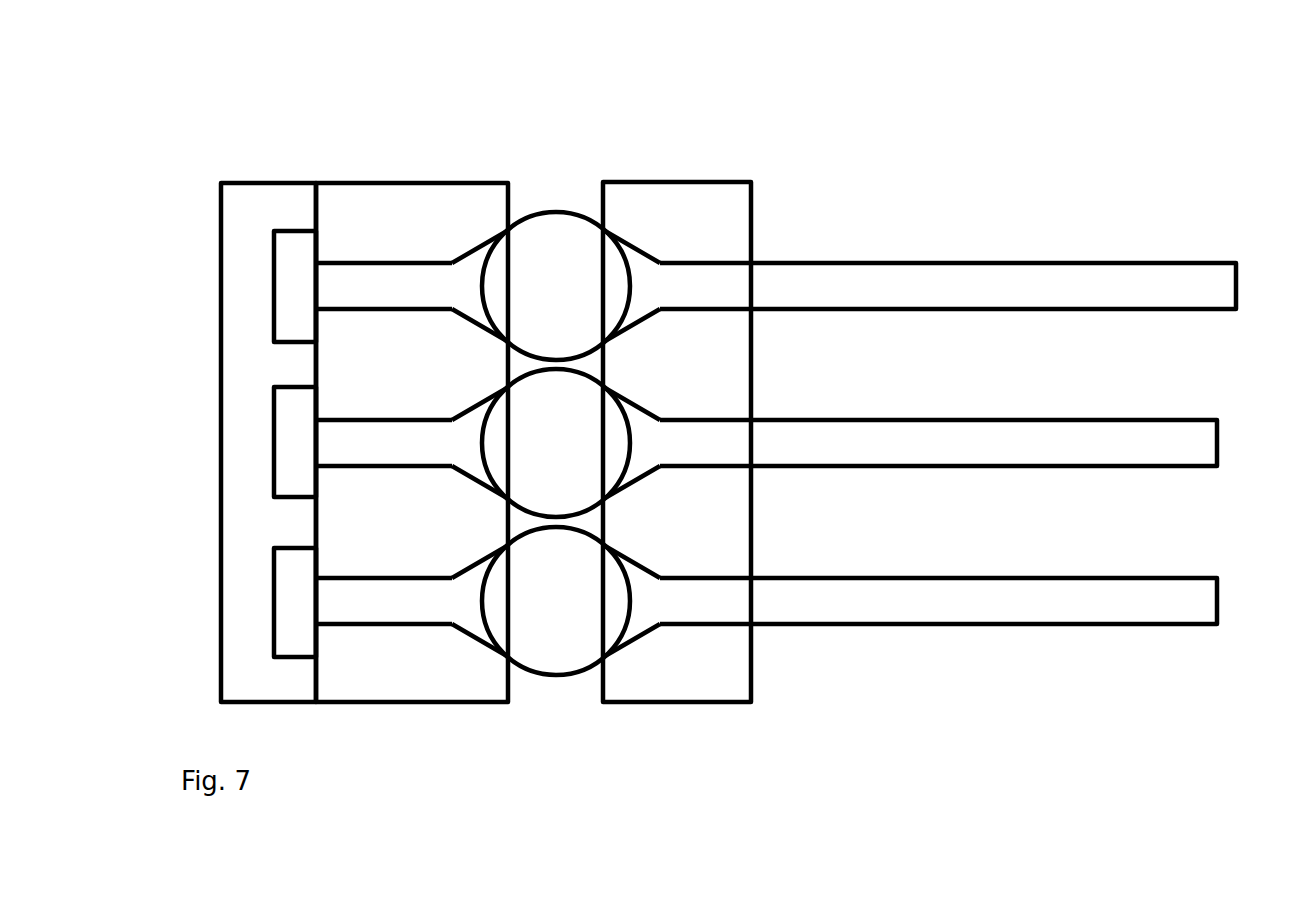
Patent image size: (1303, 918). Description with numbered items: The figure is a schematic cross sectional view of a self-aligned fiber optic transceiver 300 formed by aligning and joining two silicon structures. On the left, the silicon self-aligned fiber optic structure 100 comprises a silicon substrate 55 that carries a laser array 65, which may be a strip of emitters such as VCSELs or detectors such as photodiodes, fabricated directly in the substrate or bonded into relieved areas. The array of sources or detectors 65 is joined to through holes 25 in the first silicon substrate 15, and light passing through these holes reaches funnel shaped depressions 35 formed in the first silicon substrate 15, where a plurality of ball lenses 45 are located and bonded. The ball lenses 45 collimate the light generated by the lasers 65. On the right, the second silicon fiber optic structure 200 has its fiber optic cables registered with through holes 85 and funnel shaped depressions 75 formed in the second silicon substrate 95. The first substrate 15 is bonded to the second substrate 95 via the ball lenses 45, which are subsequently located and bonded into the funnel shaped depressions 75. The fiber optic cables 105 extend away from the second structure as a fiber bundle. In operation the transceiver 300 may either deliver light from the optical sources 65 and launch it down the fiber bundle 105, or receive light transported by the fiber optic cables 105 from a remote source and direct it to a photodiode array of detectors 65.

The first silicon substrate 15 is at (460, 210).
The through holes 25 is at (372, 285).
The funnel shaped depressions 35 is at (465, 252).
The ball lenses 45 is at (572, 278).
The silicon substrate 55 is at (233, 283).
The laser array 65 is at (272, 440).
The funnel shaped depressions 75 is at (638, 400).
The receiving waveguide 85 is at (718, 419).
The second silicon substrate 95 is at (716, 528).
The fiber optic cables 105 is at (1088, 442).
The silicon self-aligned fiber optic structure 100 is at (428, 100).
The second silicon fiber optic structure 200 is at (710, 115).
The fiber optic transceiver 300 is at (1140, 731).